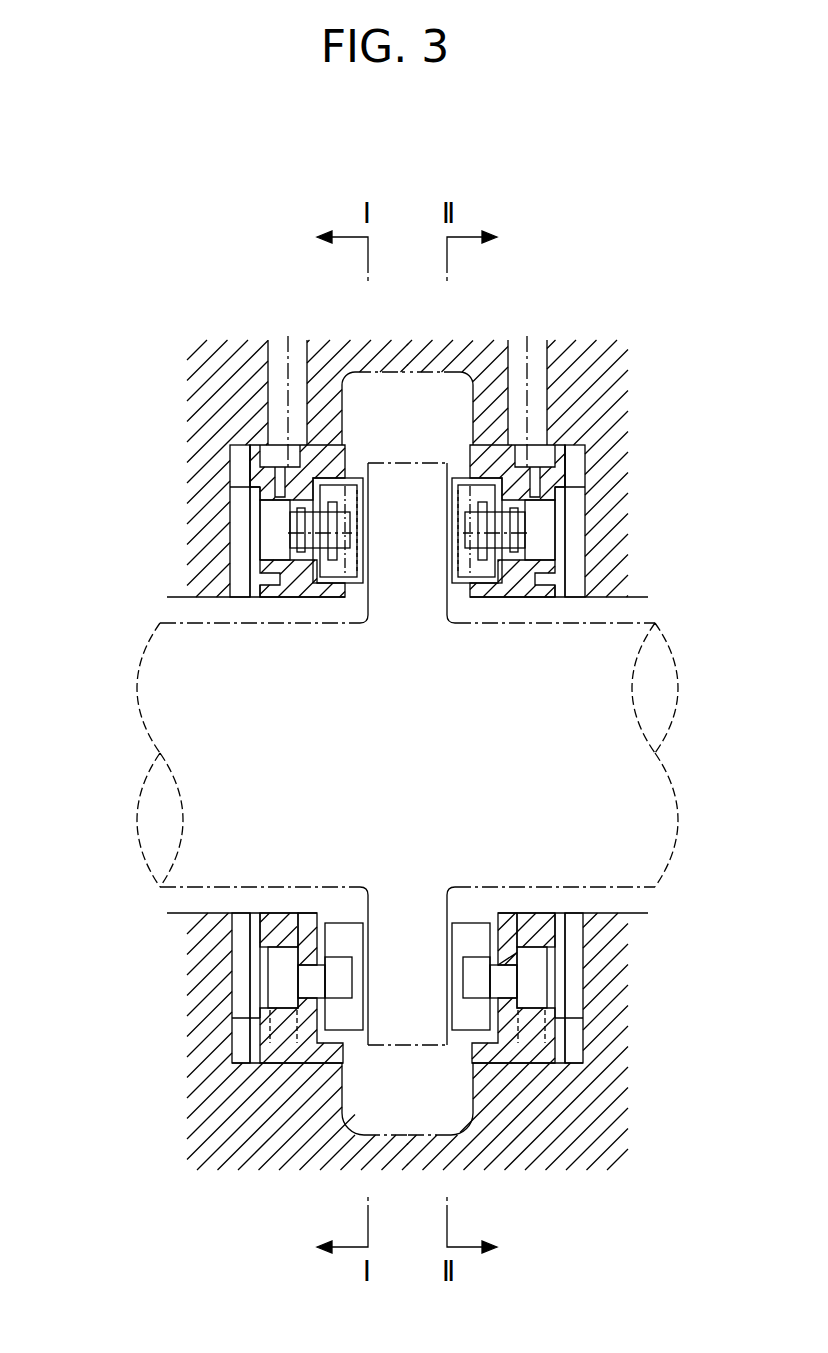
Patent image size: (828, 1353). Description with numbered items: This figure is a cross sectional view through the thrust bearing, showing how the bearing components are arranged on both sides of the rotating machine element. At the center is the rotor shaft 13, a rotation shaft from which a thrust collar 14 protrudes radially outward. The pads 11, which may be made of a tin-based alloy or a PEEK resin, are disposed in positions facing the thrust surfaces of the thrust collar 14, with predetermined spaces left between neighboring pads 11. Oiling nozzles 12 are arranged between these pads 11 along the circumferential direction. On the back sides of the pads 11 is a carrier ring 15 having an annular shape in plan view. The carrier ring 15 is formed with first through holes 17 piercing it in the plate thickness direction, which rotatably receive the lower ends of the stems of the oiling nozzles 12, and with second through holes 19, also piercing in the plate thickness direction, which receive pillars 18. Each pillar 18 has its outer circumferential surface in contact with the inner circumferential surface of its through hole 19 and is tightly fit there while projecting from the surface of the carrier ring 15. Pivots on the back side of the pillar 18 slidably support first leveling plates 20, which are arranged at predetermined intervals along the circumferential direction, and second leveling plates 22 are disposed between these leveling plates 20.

The pad 11 is at (348, 585).
The oiling nozzle 12 is at (465, 490).
The rotor shaft 13 is at (137, 697).
The thrust collar 14 is at (410, 478).
The carrier ring 15 is at (305, 578).
The first through hole 17 is at (292, 520).
The pillar 18 is at (305, 985).
The second through hole 19 is at (318, 972).
The first leveling plate 20 is at (280, 950).
The second leveling plate 22 is at (272, 552).